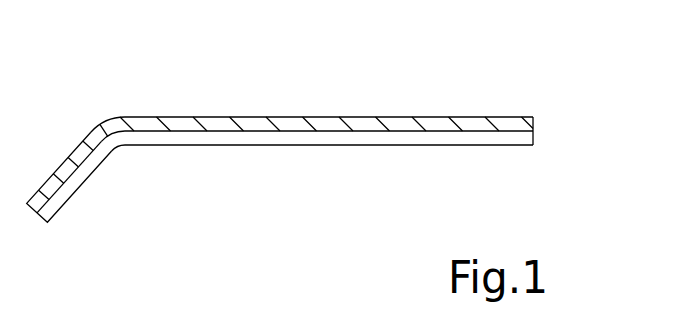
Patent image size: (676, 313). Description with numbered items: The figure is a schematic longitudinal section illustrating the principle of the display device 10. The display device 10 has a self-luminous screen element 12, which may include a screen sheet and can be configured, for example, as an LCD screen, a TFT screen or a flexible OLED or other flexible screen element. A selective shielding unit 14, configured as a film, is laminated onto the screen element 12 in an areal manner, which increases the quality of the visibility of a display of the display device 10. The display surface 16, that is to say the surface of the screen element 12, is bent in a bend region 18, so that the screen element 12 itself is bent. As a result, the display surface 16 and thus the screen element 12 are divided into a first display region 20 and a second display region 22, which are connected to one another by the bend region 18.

The display device 10 is at (548, 132).
The screen element 12 is at (390, 147).
The selective shielding unit 14 is at (408, 117).
The display surface 16 is at (262, 147).
The bend region 18 is at (100, 119).
The first display region 20 is at (87, 182).
The second display region 22 is at (342, 150).